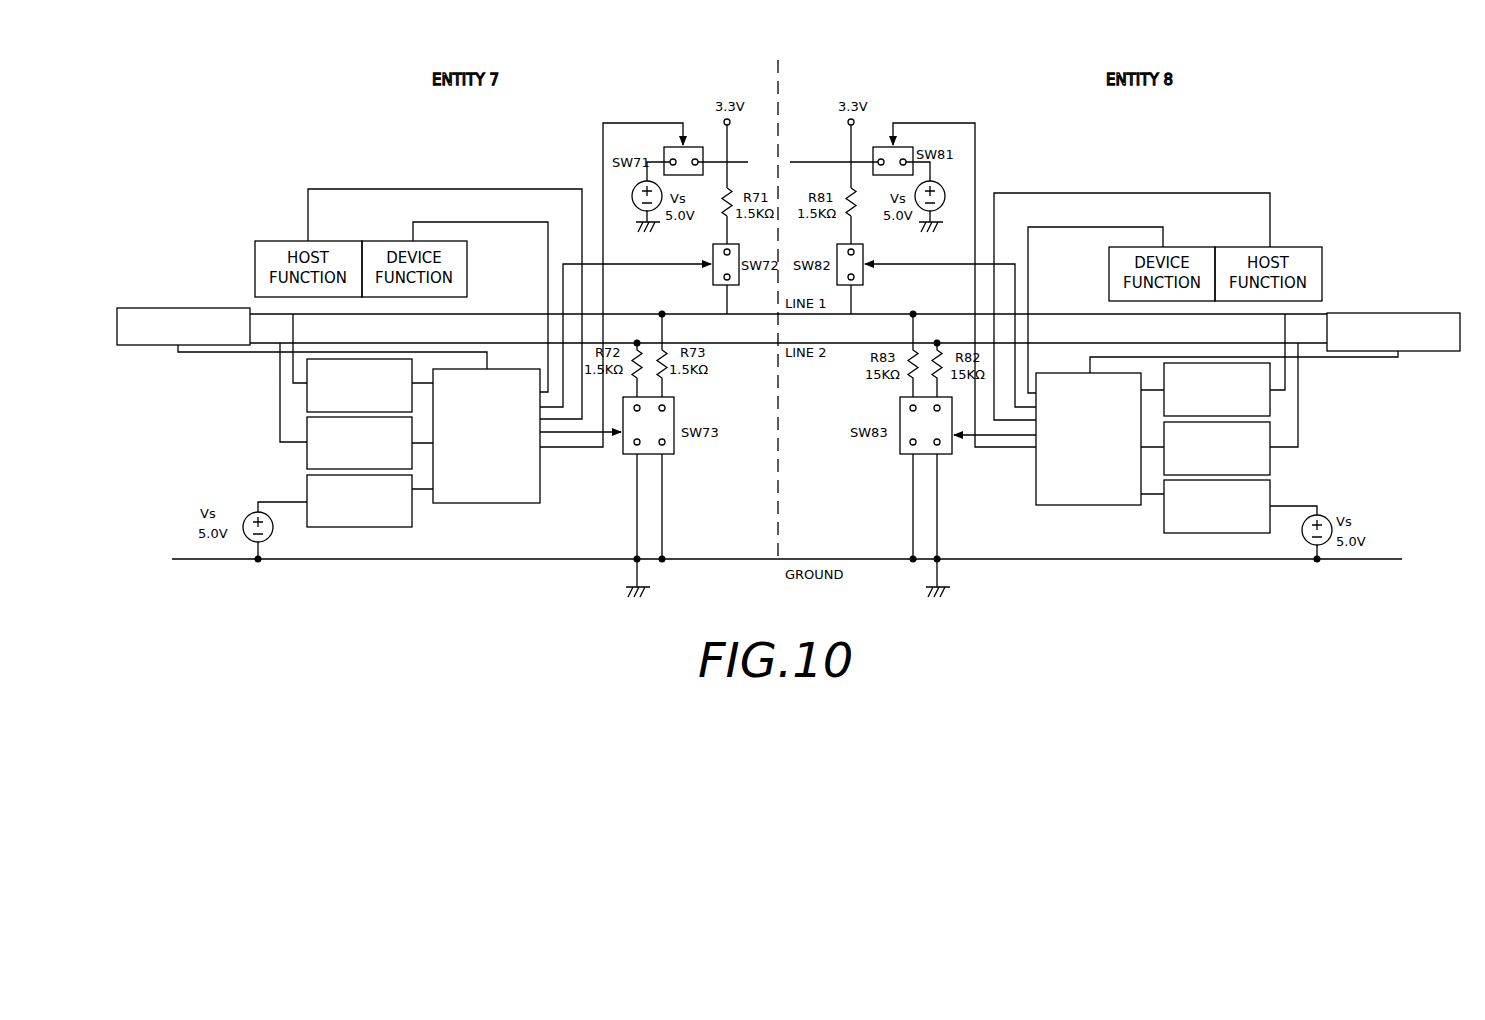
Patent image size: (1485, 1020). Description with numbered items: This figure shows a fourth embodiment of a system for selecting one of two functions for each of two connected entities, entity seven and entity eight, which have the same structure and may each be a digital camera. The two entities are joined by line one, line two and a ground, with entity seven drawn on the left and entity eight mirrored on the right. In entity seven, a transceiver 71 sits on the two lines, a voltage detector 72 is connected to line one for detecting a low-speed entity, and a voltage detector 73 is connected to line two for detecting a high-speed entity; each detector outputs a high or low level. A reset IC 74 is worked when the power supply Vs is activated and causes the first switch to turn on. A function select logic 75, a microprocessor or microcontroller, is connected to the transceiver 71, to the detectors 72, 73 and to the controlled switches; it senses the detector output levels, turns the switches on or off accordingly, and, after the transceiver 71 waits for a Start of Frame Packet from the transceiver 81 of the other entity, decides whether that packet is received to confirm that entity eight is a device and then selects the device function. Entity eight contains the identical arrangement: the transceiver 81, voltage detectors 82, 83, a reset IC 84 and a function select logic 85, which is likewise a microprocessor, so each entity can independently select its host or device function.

The transceiver 71 is at (203, 308).
The voltage detector 72 is at (307, 402).
The voltage detector 73 is at (307, 457).
The reset IC 74 is at (375, 527).
The function select logic 75 is at (513, 503).
The transceiver 81 is at (1373, 313).
The voltage detector 82 is at (1203, 363).
The voltage detector 83 is at (1270, 463).
The reset IC 84 is at (1270, 492).
The function select logic 85 is at (1057, 373).